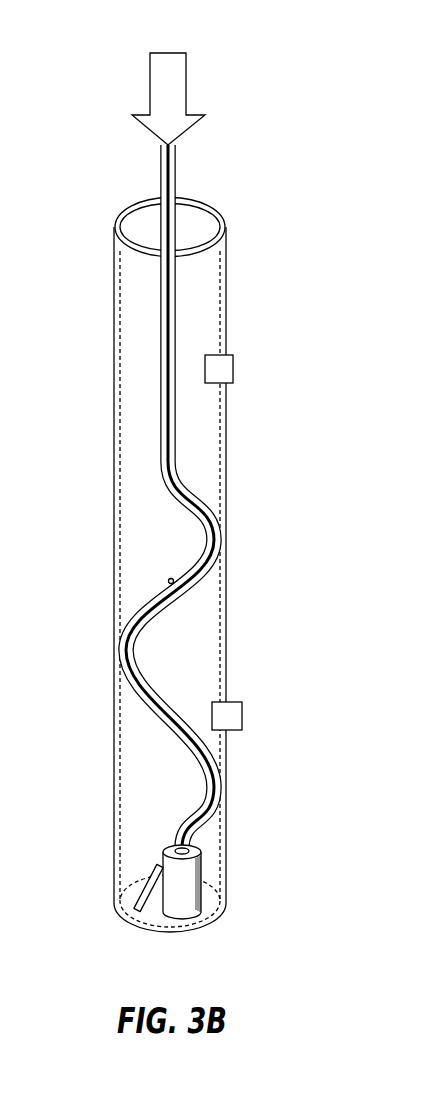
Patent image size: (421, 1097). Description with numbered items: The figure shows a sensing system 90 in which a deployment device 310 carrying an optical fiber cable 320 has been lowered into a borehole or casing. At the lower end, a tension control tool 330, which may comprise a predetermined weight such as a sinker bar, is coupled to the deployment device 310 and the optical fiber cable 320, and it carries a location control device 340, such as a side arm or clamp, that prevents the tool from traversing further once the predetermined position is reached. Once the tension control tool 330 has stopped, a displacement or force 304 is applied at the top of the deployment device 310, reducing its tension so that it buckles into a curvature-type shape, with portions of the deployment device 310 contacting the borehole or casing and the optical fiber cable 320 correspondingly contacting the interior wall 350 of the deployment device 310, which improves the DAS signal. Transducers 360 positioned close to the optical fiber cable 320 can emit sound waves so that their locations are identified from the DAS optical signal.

The sensing system 90 is at (141, 383).
The displacement or force 304 is at (149, 83).
The deployment device 310 is at (160, 183).
The optical fiber cable 320 is at (197, 512).
The tension control tool 330 is at (160, 862).
The location control device 340 is at (142, 893).
The interior wall 350 is at (169, 580).
The transducer 360 is at (233, 368).